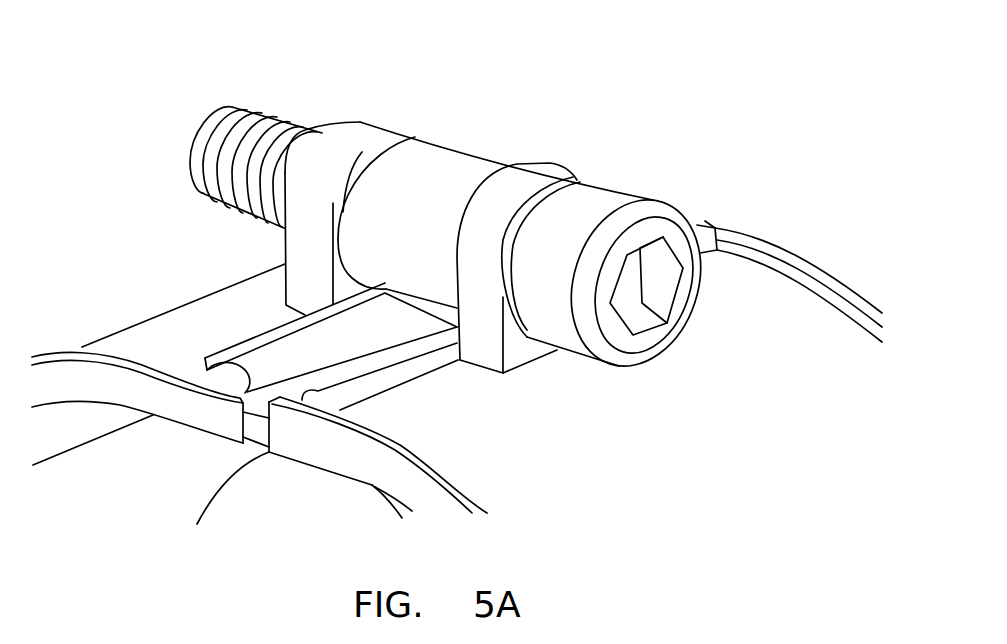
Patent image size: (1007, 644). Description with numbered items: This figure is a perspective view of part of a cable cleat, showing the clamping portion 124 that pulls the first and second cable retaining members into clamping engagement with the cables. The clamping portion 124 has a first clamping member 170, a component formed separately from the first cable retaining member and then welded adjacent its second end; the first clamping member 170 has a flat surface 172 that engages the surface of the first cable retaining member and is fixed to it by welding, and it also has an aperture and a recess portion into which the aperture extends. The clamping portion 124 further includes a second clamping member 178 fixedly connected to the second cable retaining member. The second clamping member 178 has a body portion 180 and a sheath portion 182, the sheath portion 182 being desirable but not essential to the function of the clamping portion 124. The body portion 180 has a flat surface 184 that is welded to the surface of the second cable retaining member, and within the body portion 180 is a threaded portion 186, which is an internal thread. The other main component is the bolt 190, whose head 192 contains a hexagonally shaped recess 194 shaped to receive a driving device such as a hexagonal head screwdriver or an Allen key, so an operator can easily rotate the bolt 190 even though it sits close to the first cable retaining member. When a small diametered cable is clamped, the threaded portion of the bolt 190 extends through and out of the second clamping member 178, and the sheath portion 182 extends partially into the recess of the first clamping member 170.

The clamping portion 124 is at (495, 128).
The first clamping member 170 is at (537, 177).
The flat surface 172 is at (522, 358).
The second clamping member 178 is at (372, 135).
The body portion 180 is at (348, 147).
The sheath portion 182 is at (424, 188).
The flat surface 184 is at (305, 314).
The threaded portion 186 is at (230, 138).
The bolt 190 is at (688, 299).
The head 192 is at (602, 198).
The hexagonally shaped recess 194 is at (668, 342).